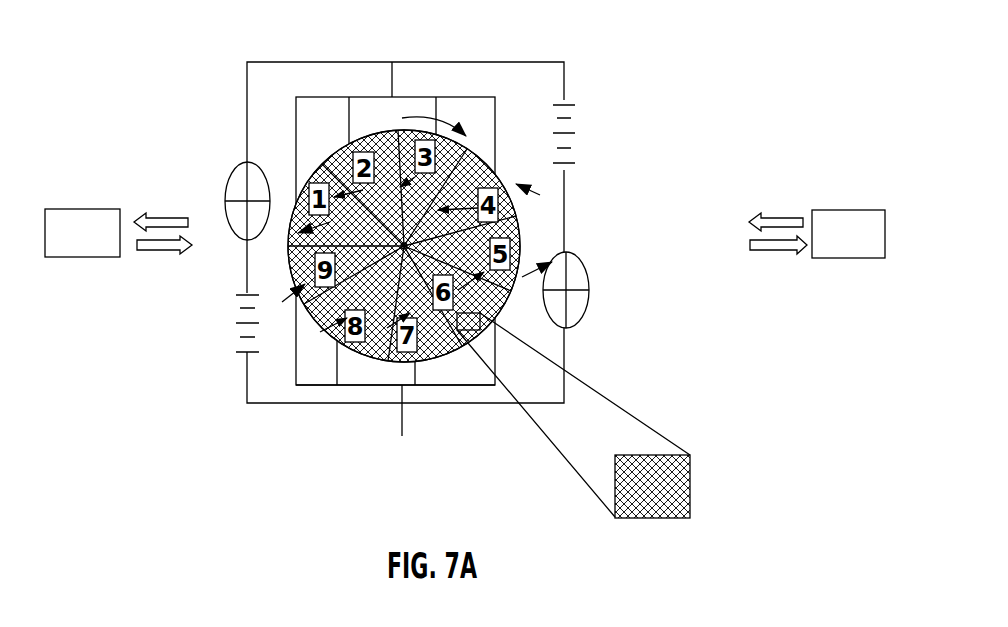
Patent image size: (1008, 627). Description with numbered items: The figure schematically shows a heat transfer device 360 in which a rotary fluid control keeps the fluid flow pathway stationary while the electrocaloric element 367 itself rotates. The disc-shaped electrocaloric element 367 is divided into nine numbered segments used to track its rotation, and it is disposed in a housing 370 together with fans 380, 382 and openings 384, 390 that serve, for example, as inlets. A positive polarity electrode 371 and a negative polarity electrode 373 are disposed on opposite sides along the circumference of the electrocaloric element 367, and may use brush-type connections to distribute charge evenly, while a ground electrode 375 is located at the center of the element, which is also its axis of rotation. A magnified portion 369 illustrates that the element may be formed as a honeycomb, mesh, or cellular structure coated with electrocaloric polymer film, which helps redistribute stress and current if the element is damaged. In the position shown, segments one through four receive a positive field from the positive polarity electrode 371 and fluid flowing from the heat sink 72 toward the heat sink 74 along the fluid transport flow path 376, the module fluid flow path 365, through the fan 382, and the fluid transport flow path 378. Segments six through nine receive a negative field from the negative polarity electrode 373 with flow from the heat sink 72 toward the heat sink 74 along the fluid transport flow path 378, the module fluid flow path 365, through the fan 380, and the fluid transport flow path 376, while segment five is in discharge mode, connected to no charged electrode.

The heat transfer device 360 is at (734, 100).
The module fluid flow path 365 is at (420, 182).
The electrocaloric element 367 is at (478, 226).
The magnified portion 369 is at (692, 490).
The housing 370 is at (432, 62).
The positive polarity electrode 371 is at (467, 97).
The negative polarity electrode 373 is at (353, 390).
The ground electrode 375 is at (500, 215).
The fluid transport flow path 376 is at (772, 250).
The fluid transport flow path 378 is at (153, 252).
The fan 380 is at (590, 310).
The fan 382 is at (225, 190).
The opening 384 is at (568, 128).
The opening 390 is at (238, 330).
The heat sink 72 is at (848, 234).
The heat sink 74 is at (82, 233).